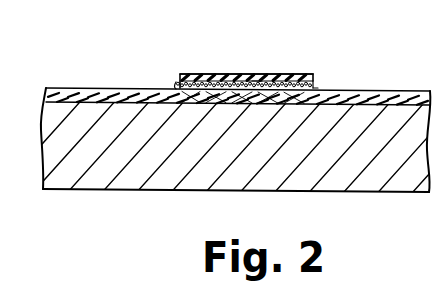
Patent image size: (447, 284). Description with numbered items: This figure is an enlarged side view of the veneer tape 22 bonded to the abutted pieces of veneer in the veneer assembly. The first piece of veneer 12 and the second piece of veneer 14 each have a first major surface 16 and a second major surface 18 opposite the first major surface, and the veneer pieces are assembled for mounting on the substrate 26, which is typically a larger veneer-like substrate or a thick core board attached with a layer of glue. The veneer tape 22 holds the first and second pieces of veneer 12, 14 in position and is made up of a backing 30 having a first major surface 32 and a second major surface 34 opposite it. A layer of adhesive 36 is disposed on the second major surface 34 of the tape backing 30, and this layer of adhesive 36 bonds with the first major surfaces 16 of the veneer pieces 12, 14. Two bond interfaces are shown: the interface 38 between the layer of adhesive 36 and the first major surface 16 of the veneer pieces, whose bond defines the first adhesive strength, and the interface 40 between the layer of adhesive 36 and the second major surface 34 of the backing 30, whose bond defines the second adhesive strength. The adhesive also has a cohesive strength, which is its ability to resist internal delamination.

The first piece of veneer 12 is at (133, 92).
The second piece of veneer 14 is at (356, 95).
The first major surface 16 is at (409, 92).
The second major surface 18 is at (68, 101).
The veneer tape 22 is at (299, 52).
The substrate 26 is at (370, 135).
The backing 30 is at (223, 79).
The first major surface 32 is at (185, 73).
The second major surface 34 is at (176, 88).
The layer of adhesive 36 is at (224, 88).
The interface 38 is at (311, 87).
The interface 40 is at (256, 79).